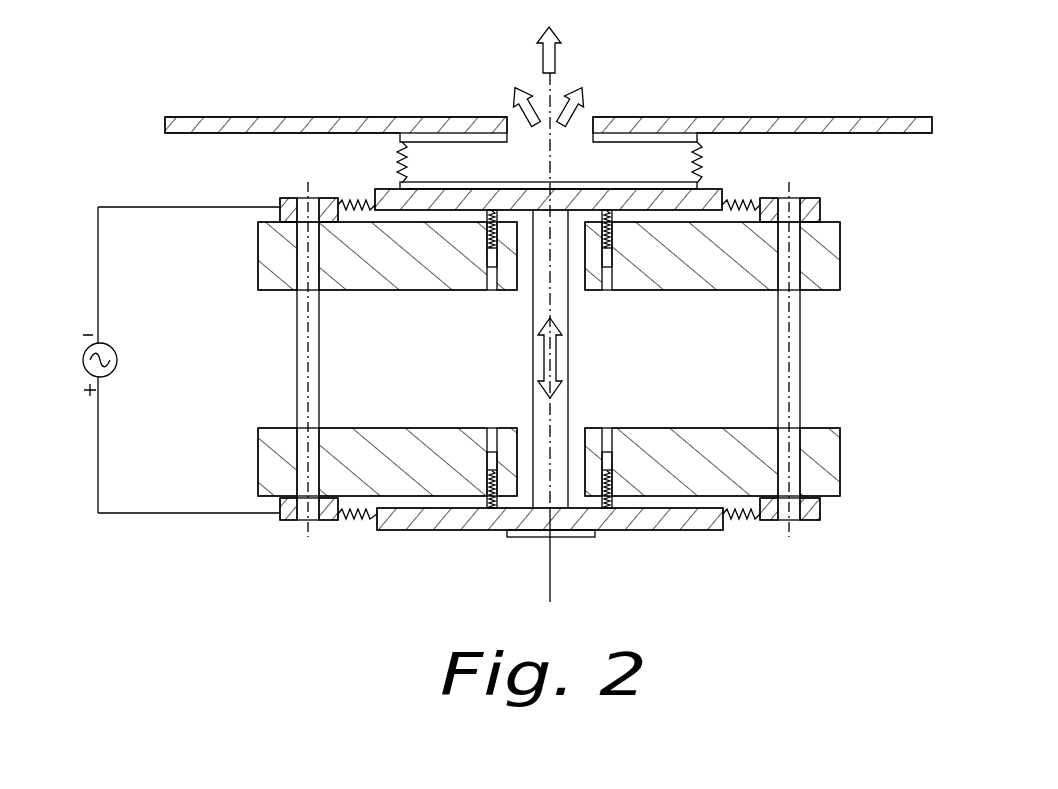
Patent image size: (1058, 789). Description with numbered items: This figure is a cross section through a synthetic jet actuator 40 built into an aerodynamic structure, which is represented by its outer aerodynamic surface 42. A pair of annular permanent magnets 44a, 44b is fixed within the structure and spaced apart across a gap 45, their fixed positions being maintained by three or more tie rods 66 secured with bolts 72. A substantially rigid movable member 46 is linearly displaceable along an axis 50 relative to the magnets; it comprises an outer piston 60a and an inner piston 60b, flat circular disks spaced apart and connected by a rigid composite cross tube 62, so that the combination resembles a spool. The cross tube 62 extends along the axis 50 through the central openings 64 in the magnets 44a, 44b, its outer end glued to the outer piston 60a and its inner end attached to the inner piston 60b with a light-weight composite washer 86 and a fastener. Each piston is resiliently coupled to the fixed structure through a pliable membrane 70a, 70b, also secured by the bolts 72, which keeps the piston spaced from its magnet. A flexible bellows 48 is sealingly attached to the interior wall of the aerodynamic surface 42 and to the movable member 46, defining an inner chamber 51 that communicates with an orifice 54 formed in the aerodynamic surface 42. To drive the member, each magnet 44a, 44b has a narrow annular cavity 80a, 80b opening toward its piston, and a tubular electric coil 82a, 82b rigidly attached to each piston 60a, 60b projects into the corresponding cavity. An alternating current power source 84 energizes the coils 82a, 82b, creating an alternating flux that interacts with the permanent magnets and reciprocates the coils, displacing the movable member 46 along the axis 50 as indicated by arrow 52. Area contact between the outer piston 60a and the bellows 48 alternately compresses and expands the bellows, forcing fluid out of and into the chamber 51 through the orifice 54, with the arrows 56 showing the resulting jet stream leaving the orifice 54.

The synthetic jet actuator 40 is at (864, 228).
The outer aerodynamic surface 42 is at (873, 116).
The annular permanent magnet 44a is at (840, 290).
The annular permanent magnet 44b is at (840, 437).
The gap 45 is at (190, 360).
The movable member 46 is at (528, 528).
The bellows 48 is at (700, 160).
The axis 50 is at (555, 567).
The inner chamber 51 is at (660, 160).
The arrow 52 is at (553, 362).
The orifice 54 is at (515, 121).
The arrows 56 is at (557, 58).
The outer piston 60a is at (375, 189).
The inner piston 60b is at (445, 533).
The cross tube 62 is at (531, 358).
The central openings 64 is at (518, 275).
The tie rods 66 is at (297, 347).
The pliable membrane 70a is at (740, 205).
The pliable membrane 70b is at (745, 520).
The bolt 72 is at (283, 522).
The cavity 80a is at (488, 258).
The cavity 80b is at (490, 455).
The electric coil 82a is at (610, 256).
The electric coil 82b is at (612, 452).
The AC power source 84 is at (118, 367).
The composite washer 86 is at (595, 538).